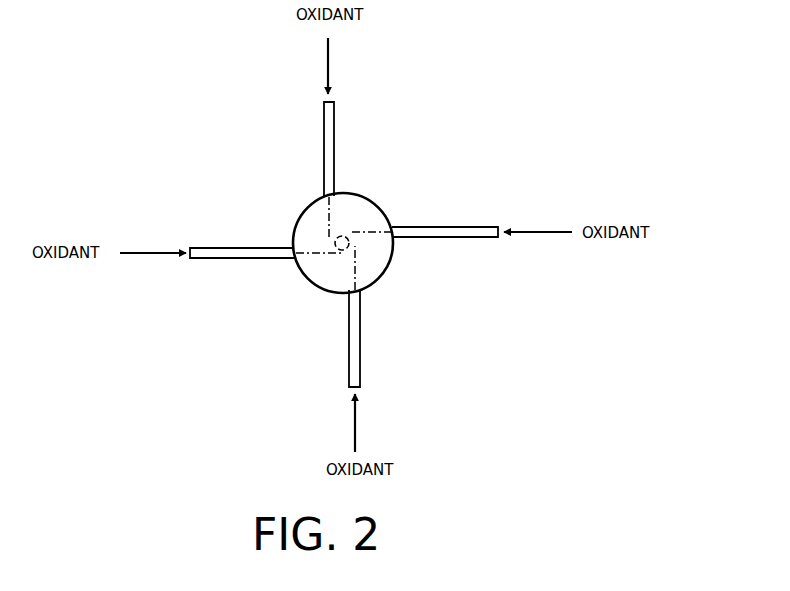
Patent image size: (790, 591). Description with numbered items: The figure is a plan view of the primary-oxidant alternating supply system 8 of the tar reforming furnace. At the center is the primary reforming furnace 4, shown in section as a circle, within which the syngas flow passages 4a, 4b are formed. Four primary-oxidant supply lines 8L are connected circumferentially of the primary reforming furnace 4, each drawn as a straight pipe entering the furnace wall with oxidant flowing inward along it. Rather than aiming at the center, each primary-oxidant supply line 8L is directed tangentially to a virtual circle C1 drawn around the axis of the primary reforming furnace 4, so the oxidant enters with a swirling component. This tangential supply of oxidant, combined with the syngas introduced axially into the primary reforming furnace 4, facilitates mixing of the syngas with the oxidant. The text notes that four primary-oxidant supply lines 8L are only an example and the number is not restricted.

The primary reforming furnace 4 is at (283, 274).
The flow passage 4a is at (275, 207).
The flow passage 4b is at (316, 224).
The primary-oxidant alternating supply system 8 is at (430, 245).
The primary-oxidant supply line 8L is at (334, 146).
The virtual circle C1 is at (347, 237).